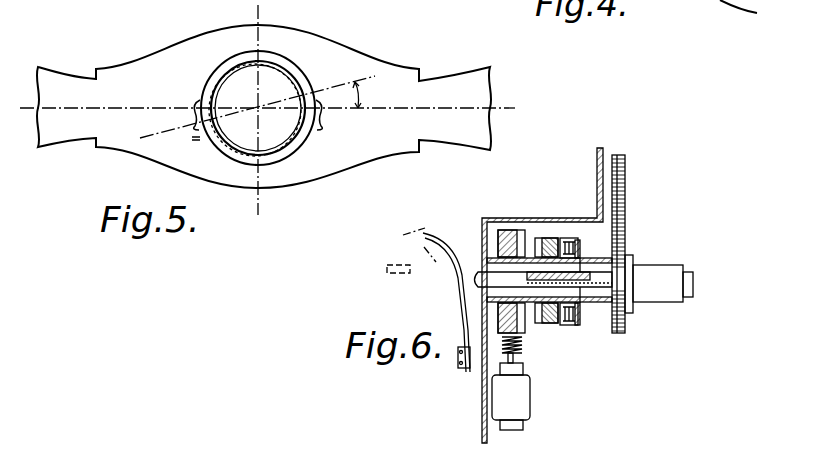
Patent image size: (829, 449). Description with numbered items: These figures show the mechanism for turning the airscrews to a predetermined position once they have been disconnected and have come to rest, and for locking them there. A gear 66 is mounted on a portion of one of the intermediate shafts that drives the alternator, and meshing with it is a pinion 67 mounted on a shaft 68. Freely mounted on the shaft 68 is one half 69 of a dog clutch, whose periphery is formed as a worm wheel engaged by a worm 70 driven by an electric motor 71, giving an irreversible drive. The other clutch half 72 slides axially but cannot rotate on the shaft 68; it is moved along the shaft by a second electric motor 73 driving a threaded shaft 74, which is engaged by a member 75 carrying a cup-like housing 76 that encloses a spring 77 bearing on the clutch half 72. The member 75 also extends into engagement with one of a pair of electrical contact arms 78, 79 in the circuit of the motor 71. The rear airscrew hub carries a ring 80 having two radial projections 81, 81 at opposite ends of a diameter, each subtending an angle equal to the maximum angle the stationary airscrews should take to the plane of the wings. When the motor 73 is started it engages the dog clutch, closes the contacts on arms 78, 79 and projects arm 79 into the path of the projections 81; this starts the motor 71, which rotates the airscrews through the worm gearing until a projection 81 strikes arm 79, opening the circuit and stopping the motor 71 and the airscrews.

In FIG. 6, the gear 66 is at (628, 210).
In FIG. 6, the pinion 67 is at (628, 326).
In FIG. 6, the shaft 68 is at (586, 303).
In FIG. 6, the dog clutch half 69 is at (510, 232).
In FIG. 6, the worm 70 is at (520, 345).
In FIG. 6, the electric motor 71 is at (522, 412).
In FIG. 6, the dog clutch half 72 is at (548, 240).
In FIG. 6, the electric motor 73 is at (672, 267).
In FIG. 6, the threaded shaft 74 is at (605, 287).
In FIG. 6, the member 75 is at (548, 325).
In FIG. 6, the cup-like housing 76 is at (567, 240).
In FIG. 6, the spring 77 is at (567, 330).
In FIG. 6, the electrical contact arm 78 is at (452, 295).
In FIG. 6, the electrical contact arm 79 is at (452, 243).
In FIG. 5, the ring 80 is at (305, 68).
In FIG. 5, the radial projection 81 is at (196, 104).